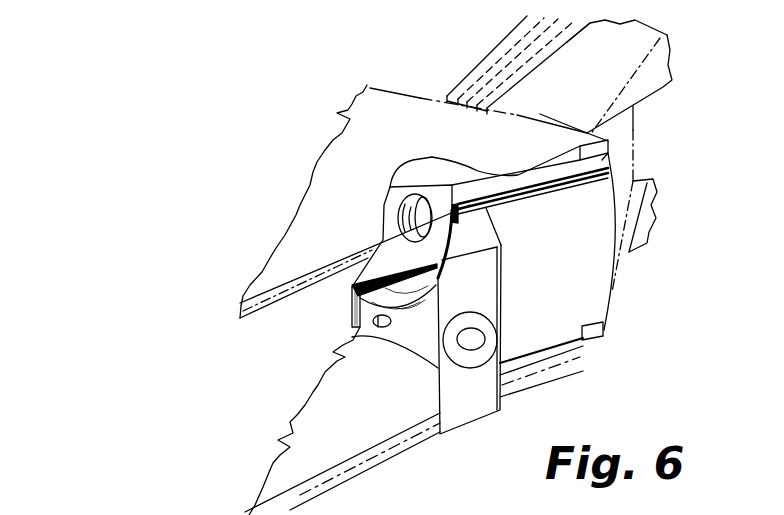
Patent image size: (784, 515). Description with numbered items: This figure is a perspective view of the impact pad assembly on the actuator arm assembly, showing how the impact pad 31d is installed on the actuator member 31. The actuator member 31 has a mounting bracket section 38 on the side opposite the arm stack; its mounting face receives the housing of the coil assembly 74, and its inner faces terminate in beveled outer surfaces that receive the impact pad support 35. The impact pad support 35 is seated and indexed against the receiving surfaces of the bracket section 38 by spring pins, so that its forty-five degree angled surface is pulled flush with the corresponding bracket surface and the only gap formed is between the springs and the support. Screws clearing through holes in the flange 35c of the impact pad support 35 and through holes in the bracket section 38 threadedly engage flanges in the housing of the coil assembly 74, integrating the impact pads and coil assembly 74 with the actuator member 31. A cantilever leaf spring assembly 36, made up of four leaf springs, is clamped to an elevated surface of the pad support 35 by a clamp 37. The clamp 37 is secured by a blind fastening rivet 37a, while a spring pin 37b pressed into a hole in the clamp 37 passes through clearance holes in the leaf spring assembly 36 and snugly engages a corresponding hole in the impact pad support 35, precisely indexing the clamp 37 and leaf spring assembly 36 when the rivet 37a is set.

The actuator member 31 is at (335, 116).
The impact pad 31d is at (535, 323).
The impact pad support 35 is at (483, 168).
The flange 35c is at (390, 195).
The cantilever leaf spring assembly 36 is at (575, 257).
The clamp 37 is at (437, 392).
The blind fastening rivet 37a is at (481, 370).
The spring pin 37b is at (350, 333).
The mounting bracket section 38 is at (365, 82).
The coil assembly 74 is at (505, 57).